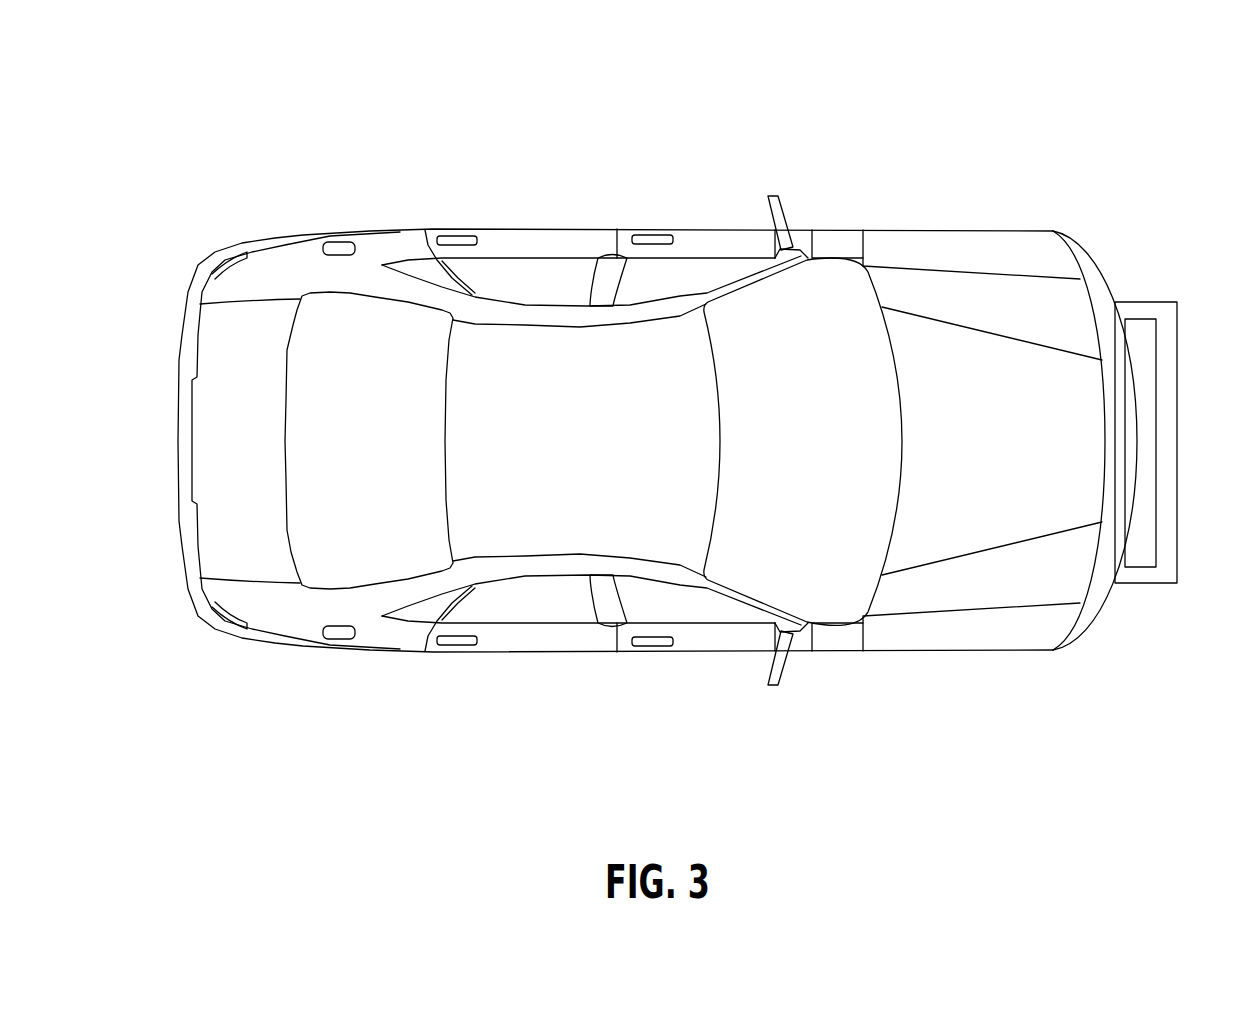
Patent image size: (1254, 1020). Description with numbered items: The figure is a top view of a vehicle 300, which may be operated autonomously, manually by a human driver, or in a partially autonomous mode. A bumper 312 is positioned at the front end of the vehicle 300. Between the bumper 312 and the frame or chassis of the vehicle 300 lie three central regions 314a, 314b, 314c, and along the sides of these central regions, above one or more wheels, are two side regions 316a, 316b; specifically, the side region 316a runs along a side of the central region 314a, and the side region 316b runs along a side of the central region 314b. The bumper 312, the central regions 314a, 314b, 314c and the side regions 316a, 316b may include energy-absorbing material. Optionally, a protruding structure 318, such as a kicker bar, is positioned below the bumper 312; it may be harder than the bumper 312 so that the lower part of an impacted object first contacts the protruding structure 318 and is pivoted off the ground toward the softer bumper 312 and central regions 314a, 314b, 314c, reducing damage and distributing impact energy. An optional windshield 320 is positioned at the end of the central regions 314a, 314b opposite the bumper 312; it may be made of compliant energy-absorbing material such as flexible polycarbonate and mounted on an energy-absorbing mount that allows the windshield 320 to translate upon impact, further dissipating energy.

The vehicle 300 is at (135, 111).
The bumper 312 is at (1110, 277).
The central region 314a is at (1063, 316).
The central region 314b is at (1063, 586).
The central region 314c is at (1062, 441).
The side region 316a is at (990, 261).
The side region 316b is at (1008, 641).
The protruding structure 318 is at (1178, 428).
The windshield 320 is at (820, 443).